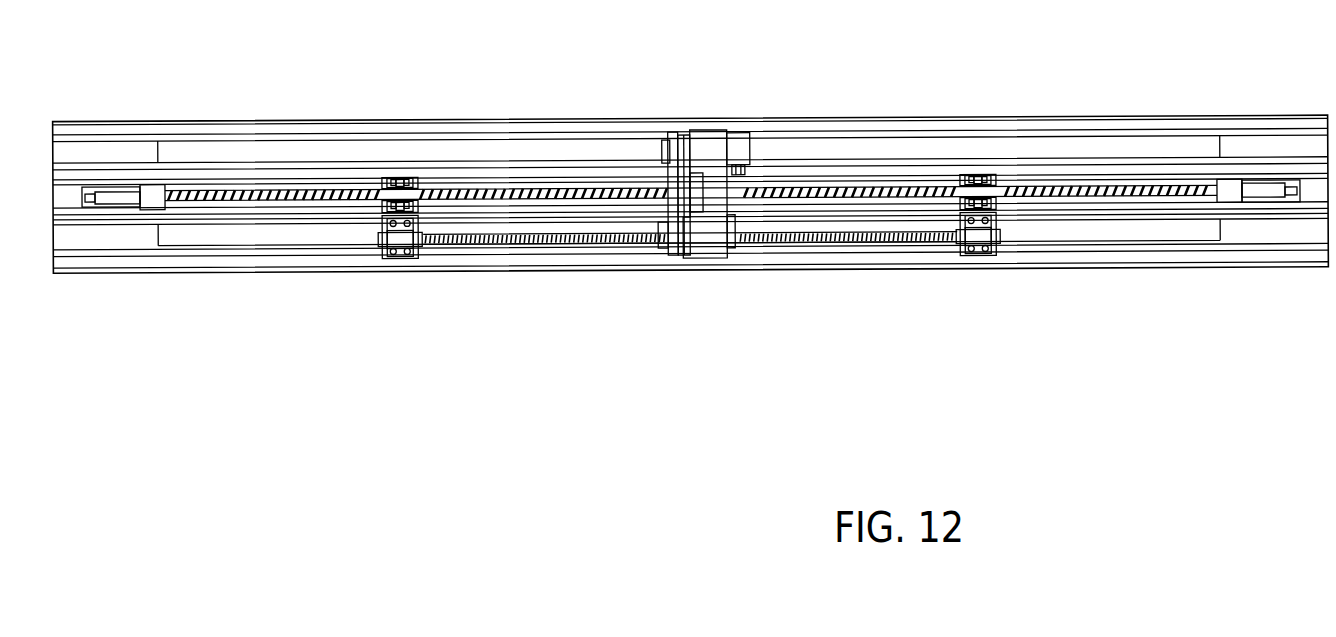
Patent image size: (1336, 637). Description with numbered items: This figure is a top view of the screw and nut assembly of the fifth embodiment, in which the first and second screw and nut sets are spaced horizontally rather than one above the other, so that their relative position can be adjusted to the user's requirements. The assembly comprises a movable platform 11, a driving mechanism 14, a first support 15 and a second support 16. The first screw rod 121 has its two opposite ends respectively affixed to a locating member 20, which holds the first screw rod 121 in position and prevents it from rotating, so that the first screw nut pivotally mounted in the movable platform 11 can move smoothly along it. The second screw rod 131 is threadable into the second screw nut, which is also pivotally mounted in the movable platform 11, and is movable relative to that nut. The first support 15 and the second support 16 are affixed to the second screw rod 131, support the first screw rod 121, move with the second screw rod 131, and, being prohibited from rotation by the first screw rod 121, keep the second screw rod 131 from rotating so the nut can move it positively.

The movable platform 11 is at (715, 150).
The driving mechanism 14 is at (741, 110).
The first support 15 is at (991, 257).
The second support 16 is at (389, 258).
The locating member 20 is at (1228, 190).
The first screw rod 121 is at (611, 186).
The second screw rod 131 is at (658, 250).